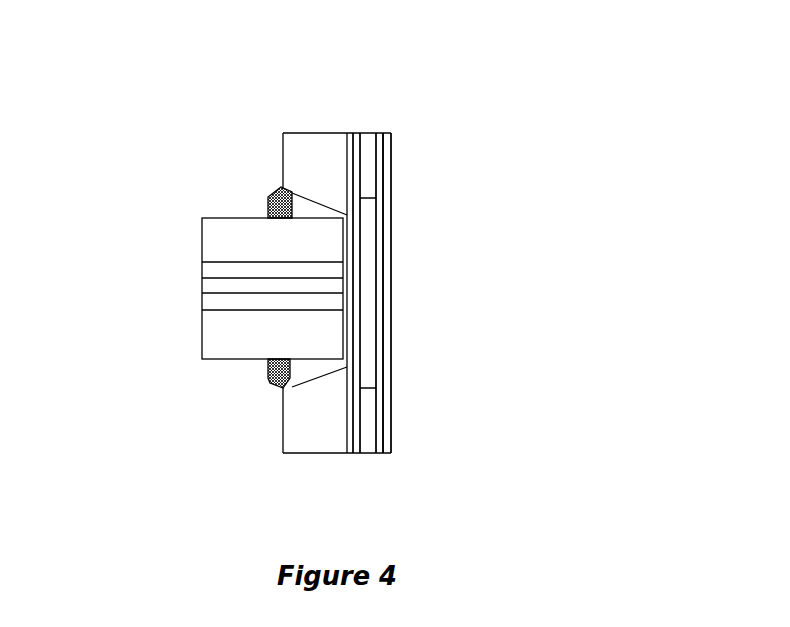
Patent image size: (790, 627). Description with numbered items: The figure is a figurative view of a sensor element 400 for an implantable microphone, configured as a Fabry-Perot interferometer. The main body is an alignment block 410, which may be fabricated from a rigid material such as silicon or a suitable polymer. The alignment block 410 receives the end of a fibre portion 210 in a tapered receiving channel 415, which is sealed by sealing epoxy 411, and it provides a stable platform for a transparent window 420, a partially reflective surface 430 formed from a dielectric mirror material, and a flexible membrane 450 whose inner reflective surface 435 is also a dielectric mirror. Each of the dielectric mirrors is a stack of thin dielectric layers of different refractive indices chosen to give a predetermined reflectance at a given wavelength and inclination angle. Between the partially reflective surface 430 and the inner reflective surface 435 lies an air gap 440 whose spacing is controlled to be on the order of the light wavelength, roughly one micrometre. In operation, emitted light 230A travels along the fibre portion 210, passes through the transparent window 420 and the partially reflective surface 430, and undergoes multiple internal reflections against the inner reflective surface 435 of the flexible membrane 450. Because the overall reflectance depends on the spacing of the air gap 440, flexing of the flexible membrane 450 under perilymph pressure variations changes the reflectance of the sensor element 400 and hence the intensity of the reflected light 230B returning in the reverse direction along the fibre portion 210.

The sensor element 400 is at (322, 92).
The alignment block 410 is at (282, 435).
The sealing epoxy 411 is at (268, 377).
The tapered receiving channel 415 is at (315, 202).
The transparent window 420 is at (347, 455).
The partially reflective surface 430 is at (355, 133).
The inner reflective surface 435 is at (380, 133).
The air gap 440 is at (371, 300).
The flexible membrane 450 is at (392, 237).
The fibre portion 210 is at (262, 262).
The emitted light 230A is at (162, 283).
The reflected light 230B is at (46, 304).